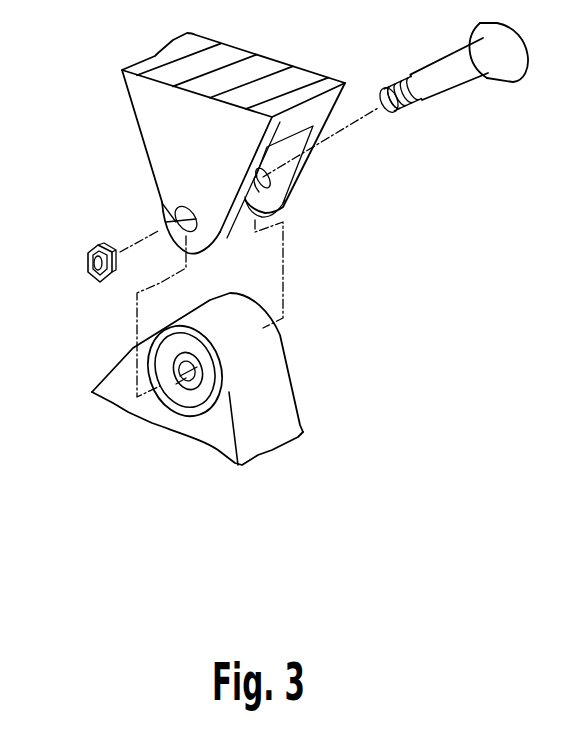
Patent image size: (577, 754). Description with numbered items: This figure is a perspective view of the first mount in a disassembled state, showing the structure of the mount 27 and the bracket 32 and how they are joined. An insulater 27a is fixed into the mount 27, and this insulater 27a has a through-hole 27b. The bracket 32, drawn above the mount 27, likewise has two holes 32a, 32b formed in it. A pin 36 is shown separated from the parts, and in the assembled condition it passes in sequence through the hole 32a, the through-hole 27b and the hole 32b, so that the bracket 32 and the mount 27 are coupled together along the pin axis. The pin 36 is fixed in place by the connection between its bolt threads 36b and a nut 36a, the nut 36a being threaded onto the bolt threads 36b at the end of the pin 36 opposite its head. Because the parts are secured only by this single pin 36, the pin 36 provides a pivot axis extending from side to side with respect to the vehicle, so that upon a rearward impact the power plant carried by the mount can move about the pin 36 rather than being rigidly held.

The bracket 32 is at (264, 62).
The hole 32a is at (268, 185).
The hole 32b is at (157, 194).
The pin 36 is at (470, 83).
The nut 36a is at (88, 247).
The bolt threads 36b is at (385, 88).
The mount 27 is at (287, 352).
The insulater 27a is at (195, 400).
The through-hole 27b is at (194, 378).